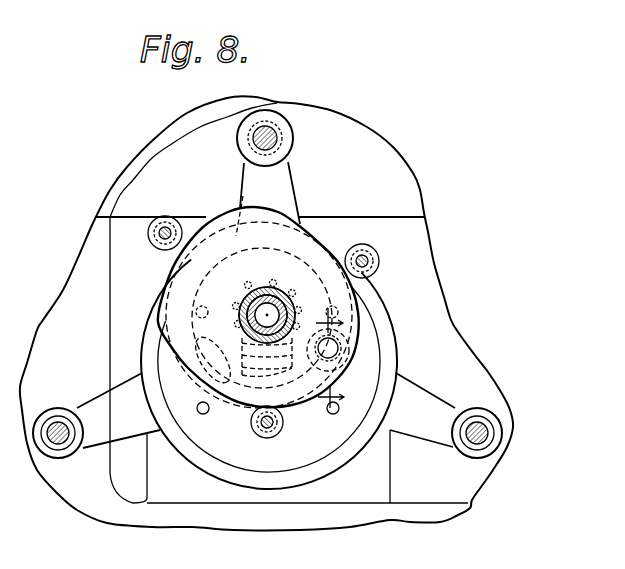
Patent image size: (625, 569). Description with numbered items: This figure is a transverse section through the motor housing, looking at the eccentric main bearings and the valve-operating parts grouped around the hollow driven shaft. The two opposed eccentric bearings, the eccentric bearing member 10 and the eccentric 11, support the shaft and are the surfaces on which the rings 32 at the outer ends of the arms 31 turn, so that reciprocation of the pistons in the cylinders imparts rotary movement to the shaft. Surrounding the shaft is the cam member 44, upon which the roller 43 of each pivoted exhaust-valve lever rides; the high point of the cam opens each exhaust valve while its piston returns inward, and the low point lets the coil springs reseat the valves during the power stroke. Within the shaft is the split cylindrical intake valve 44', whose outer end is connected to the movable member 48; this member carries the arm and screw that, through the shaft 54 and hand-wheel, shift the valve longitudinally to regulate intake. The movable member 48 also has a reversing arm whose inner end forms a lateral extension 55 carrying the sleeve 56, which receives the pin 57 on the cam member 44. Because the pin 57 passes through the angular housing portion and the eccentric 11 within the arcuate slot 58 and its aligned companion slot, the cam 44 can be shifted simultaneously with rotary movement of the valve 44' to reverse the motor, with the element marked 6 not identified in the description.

The pinion 6 is at (289, 293).
The eccentric bearing member 10 is at (324, 361).
The eccentric 11 is at (217, 440).
The arms 31 is at (292, 186).
The rings 32 is at (372, 298).
The roller 43 is at (163, 216).
The cam member 44 is at (237, 315).
The cylindrical body valve 44' is at (255, 302).
The movable member 48 is at (240, 310).
The shaft 54 is at (264, 287).
The lateral extension 55 is at (298, 405).
The sleeve 56 is at (339, 342).
The pin 57 is at (339, 350).
The arcuate slot 58 is at (208, 337).